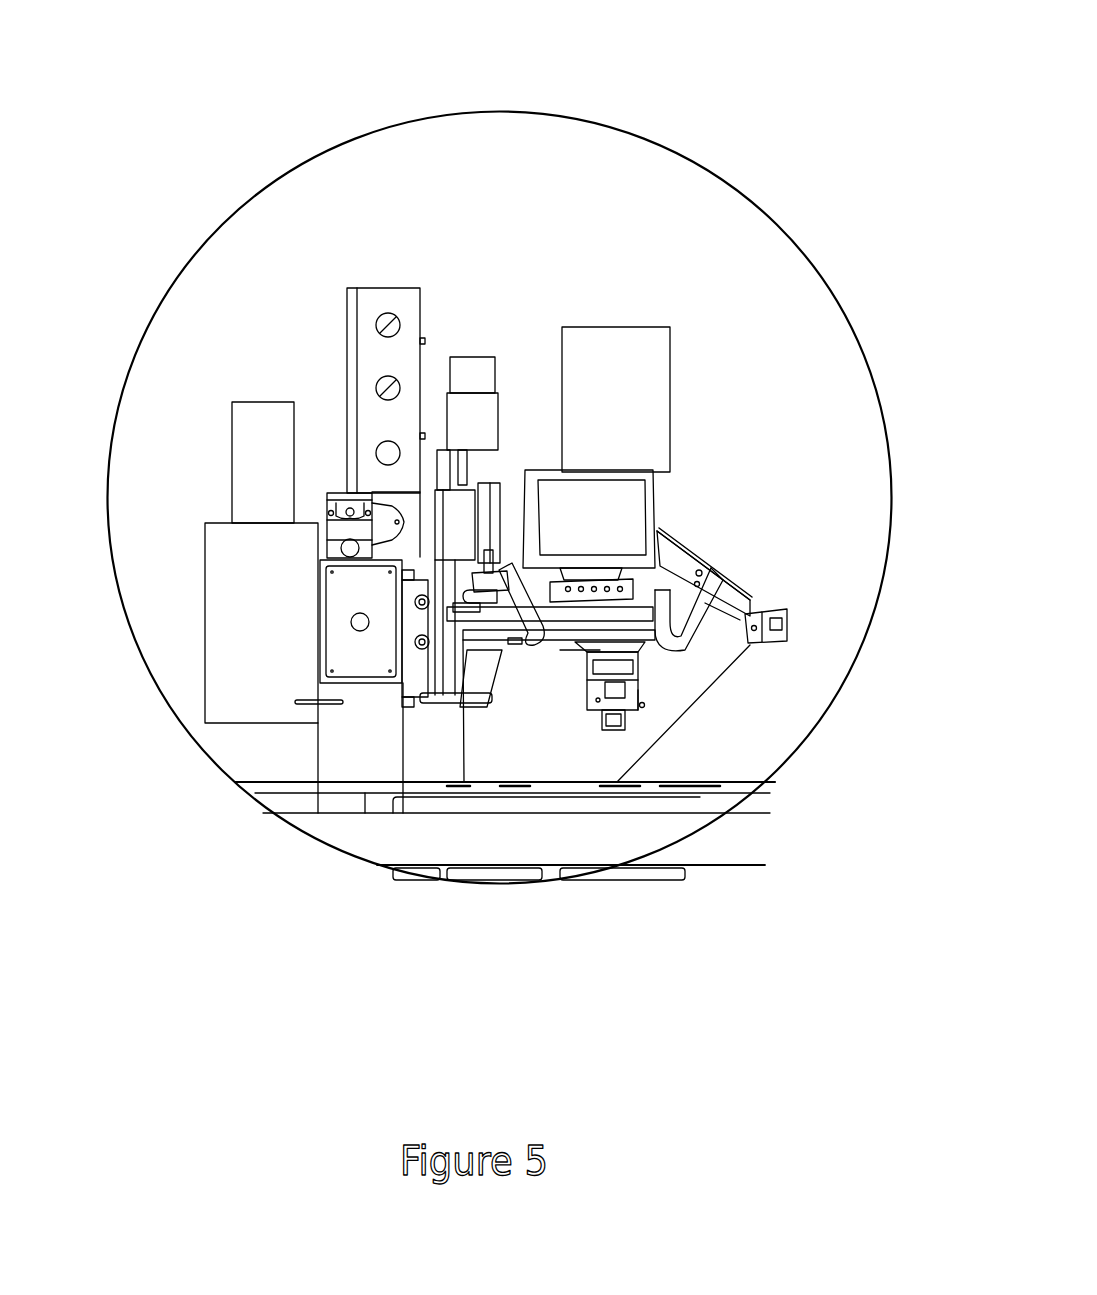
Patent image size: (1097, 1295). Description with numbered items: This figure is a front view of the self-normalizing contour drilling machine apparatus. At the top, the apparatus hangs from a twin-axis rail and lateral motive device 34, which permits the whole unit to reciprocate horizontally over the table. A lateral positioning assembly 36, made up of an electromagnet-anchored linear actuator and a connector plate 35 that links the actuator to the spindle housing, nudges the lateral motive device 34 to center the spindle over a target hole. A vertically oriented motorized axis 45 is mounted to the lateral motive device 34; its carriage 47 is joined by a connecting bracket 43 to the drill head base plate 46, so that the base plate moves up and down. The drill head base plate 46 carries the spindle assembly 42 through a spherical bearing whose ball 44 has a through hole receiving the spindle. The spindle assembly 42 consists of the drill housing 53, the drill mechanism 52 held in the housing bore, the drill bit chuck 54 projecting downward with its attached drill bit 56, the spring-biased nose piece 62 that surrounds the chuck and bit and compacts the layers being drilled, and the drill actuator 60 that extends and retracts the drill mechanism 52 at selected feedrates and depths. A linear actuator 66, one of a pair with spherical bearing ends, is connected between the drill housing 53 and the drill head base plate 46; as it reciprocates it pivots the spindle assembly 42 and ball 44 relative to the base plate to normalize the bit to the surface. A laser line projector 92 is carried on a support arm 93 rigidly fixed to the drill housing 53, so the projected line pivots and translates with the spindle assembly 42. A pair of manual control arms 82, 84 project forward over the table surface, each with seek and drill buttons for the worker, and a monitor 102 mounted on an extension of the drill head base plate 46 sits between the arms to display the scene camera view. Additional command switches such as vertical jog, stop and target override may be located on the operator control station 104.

The lateral motive device 34 is at (410, 677).
The connector plate 35 is at (347, 492).
The lateral positioning assembly 36 is at (328, 550).
The spindle assembly 42 is at (583, 655).
The connecting bracket 43 is at (493, 508).
The ball 44 is at (600, 642).
The motorized axis 45 is at (472, 440).
The drill head base plate 46 is at (502, 645).
The carriage 47 is at (460, 510).
The drill mechanism 52 is at (636, 660).
The drill housing 53 is at (640, 700).
The drill bit chuck 54 is at (617, 718).
The drill bit 56 is at (640, 706).
The drill actuator 60 is at (655, 340).
The nose piece 62 is at (587, 712).
The linear actuator 66 is at (480, 580).
The manual control arm 82 is at (513, 593).
The manual control arm 84 is at (660, 655).
The laser line projector 92 is at (753, 645).
The support arm 93 is at (679, 558).
The monitor 102 is at (583, 493).
The operator control station 104 is at (347, 310).